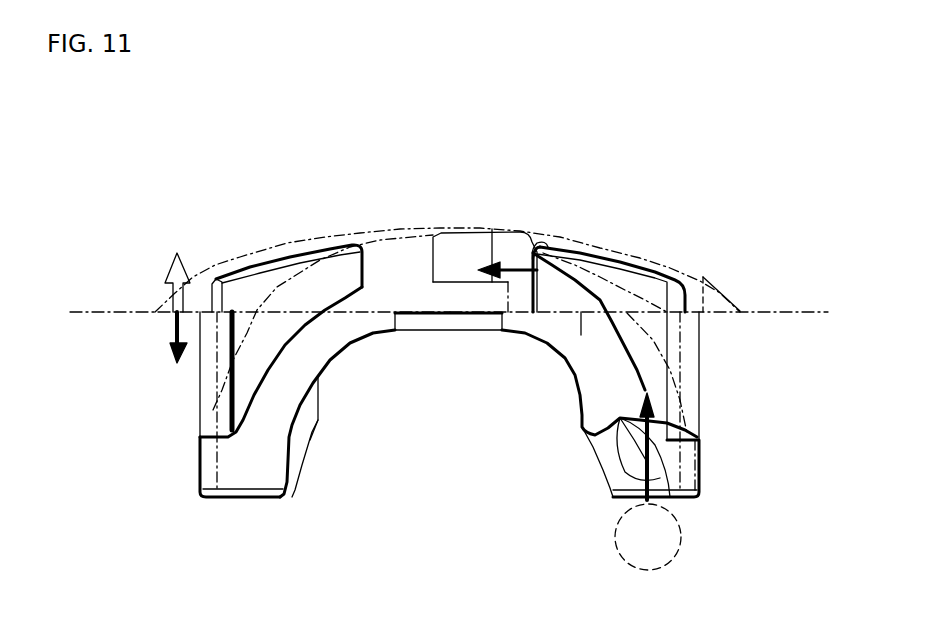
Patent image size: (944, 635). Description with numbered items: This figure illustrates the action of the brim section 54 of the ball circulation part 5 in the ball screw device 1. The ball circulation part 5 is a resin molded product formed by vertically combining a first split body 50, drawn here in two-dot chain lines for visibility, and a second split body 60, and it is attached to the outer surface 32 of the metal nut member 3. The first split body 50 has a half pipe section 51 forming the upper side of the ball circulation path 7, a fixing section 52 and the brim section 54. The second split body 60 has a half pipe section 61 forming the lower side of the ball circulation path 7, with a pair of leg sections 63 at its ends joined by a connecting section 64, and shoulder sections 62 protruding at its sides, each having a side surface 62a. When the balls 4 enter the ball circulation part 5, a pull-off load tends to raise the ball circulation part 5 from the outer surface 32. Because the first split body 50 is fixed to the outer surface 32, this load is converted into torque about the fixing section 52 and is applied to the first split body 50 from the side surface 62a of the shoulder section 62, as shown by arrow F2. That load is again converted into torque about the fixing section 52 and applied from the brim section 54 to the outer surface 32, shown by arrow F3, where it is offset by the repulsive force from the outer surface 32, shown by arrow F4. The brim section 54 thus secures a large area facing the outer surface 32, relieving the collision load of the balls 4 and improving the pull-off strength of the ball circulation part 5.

The ball screw device 1 is at (145, 170).
The nut member 3 is at (780, 311).
The balls 4 is at (682, 537).
The ball circulation part 5 is at (526, 222).
The ball circulation path 7 is at (610, 296).
The outer surface 32 is at (123, 310).
The first split body 50 is at (408, 228).
The half pipe section 51 is at (186, 390).
The fixing section 52 is at (463, 268).
The brim section 54 is at (240, 257).
The second split body 60 is at (377, 333).
The half pipe section 61 is at (339, 358).
The shoulder section 62 is at (271, 245).
The side surface 62a is at (545, 234).
The leg section 63 is at (186, 477).
The connecting section 64 is at (440, 340).
The arrow F2 is at (513, 258).
The arrow F3 is at (173, 322).
The arrow F4 is at (170, 283).